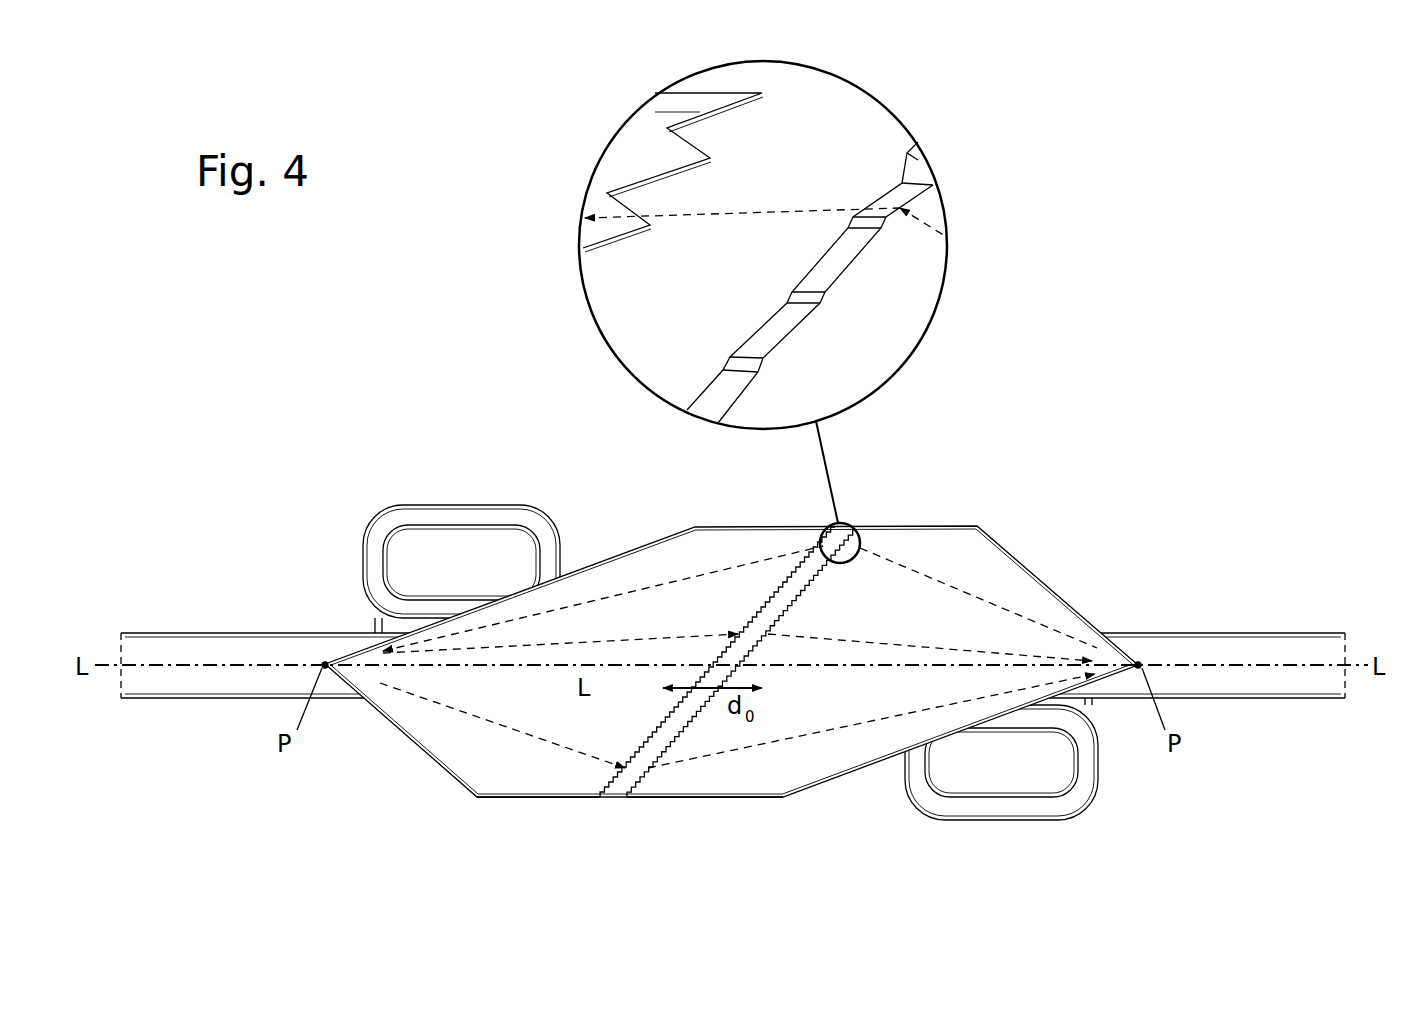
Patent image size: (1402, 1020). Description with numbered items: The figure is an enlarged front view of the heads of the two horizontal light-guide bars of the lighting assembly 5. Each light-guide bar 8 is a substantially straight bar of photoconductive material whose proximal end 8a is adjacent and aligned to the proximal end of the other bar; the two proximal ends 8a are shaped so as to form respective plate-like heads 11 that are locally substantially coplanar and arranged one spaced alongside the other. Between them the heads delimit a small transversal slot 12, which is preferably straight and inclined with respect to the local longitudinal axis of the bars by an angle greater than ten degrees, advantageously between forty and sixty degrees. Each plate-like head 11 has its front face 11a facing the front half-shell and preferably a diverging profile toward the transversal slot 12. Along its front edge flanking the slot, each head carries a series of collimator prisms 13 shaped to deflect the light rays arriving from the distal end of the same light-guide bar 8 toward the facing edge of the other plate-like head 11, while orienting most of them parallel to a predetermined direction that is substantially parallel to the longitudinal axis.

The lighting assembly 5 is at (1214, 410).
The light-guide bar 8 is at (145, 684).
The proximal end 8a is at (470, 799).
The plate-like head 11 is at (955, 548).
The front face 11a is at (688, 614).
The transversal slot 12 is at (795, 588).
The collimator prisms 13 is at (702, 150).